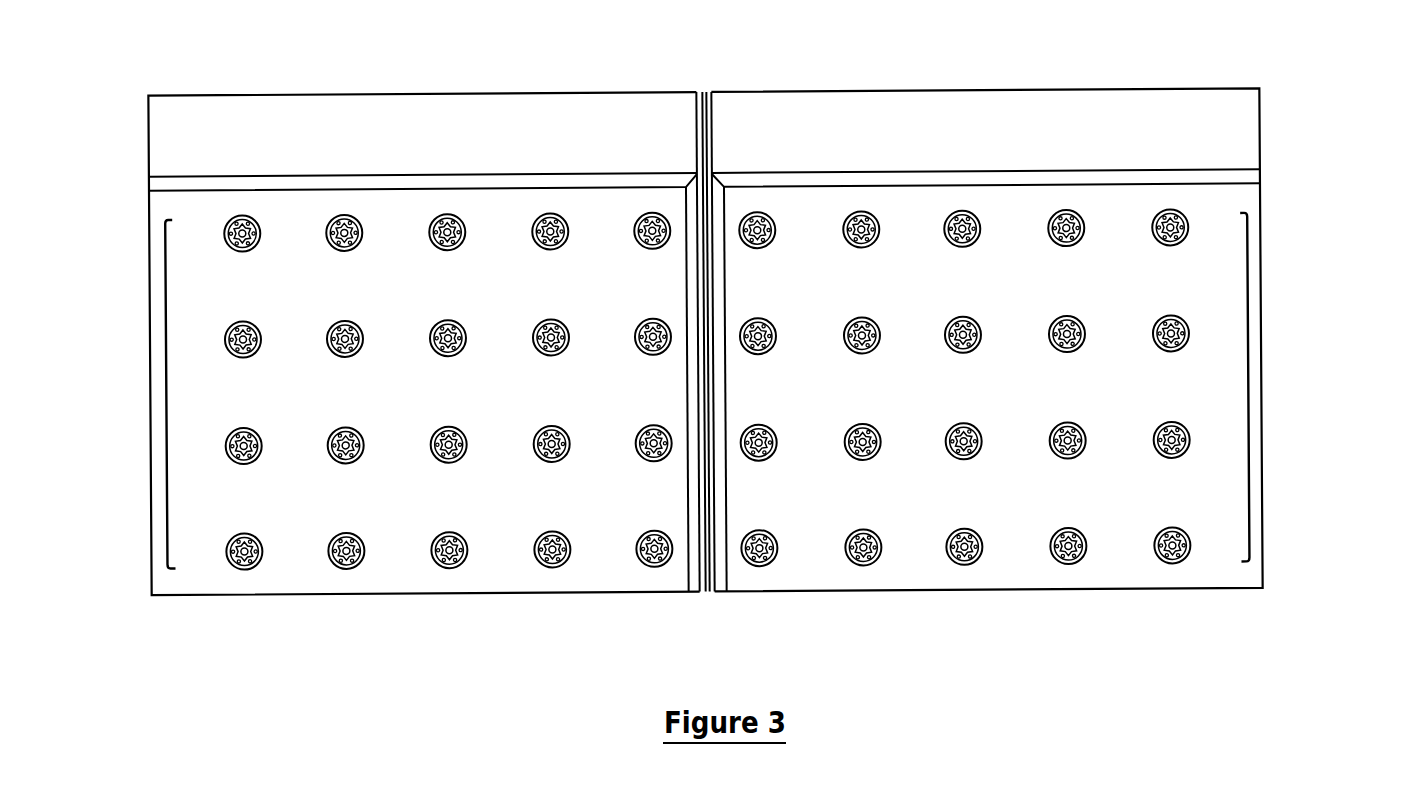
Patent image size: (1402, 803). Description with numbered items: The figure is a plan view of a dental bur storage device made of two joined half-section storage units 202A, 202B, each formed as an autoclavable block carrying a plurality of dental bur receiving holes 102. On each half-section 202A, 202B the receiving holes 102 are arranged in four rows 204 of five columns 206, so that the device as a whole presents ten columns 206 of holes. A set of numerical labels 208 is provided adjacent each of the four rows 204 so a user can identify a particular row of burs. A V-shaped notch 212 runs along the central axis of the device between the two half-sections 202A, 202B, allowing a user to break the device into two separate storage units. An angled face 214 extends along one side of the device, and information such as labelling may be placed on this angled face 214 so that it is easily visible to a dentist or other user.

The dental bur receiving hole 102 is at (332, 458).
The first panel 202A is at (1054, 668).
The second panel 202B is at (422, 671).
The row 204 is at (714, 349).
The column 206 is at (343, 192).
The numerical label 208 is at (166, 389).
The V-shaped notch 212 is at (706, 153).
The angled face 214 is at (593, 181).